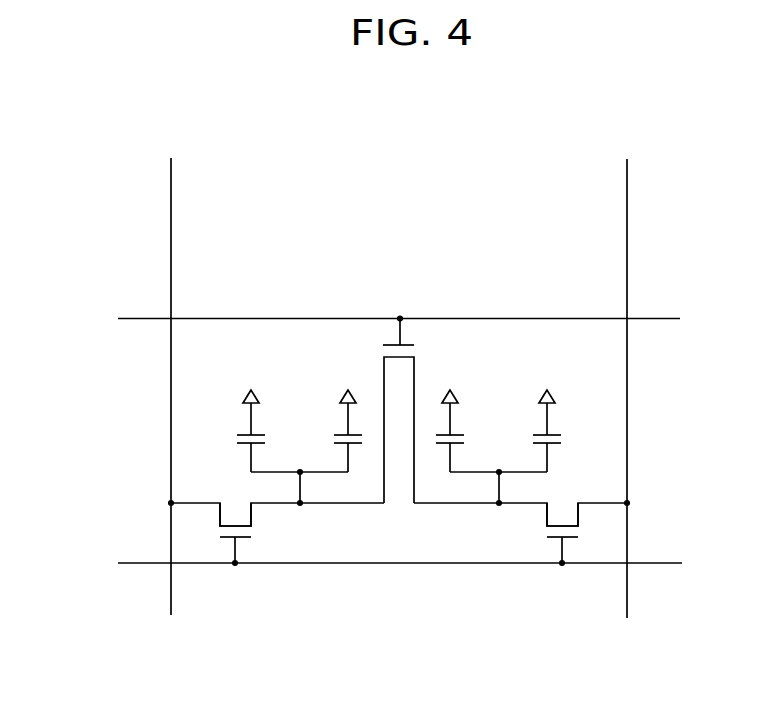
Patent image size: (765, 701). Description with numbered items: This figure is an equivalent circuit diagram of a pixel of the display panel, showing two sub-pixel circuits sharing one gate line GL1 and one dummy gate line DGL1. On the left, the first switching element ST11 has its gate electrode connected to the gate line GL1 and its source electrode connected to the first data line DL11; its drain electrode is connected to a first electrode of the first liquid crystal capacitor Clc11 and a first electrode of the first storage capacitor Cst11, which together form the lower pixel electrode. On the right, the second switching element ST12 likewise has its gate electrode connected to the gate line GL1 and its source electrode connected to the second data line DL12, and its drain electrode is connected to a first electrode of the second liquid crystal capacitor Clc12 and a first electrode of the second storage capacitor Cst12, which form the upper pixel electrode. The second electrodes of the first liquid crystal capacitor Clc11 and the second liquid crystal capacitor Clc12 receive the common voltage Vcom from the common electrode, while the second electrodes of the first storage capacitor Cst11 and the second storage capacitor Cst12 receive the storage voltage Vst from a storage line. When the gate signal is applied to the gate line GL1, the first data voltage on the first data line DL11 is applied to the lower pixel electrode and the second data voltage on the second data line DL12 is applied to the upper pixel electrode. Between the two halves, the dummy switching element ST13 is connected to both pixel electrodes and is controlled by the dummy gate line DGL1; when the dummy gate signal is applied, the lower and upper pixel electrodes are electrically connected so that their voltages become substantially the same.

The first data line DL11 is at (170, 373).
The second data line DL12 is at (628, 375).
The dummy gate line DGL1 is at (374, 317).
The gate line GL1 is at (381, 564).
The first switching element ST11 is at (260, 542).
The second switching element ST12 is at (538, 542).
The dummy switching element ST13 is at (419, 335).
The first liquid crystal capacitor Clc11 is at (221, 437).
The first storage capacitor Cst11 is at (318, 437).
The second liquid crystal capacitor Clc12 is at (481, 437).
The second storage capacitor Cst12 is at (577, 437).
The common voltage Vcom is at (351, 384).
The storage voltage Vst is at (445, 384).